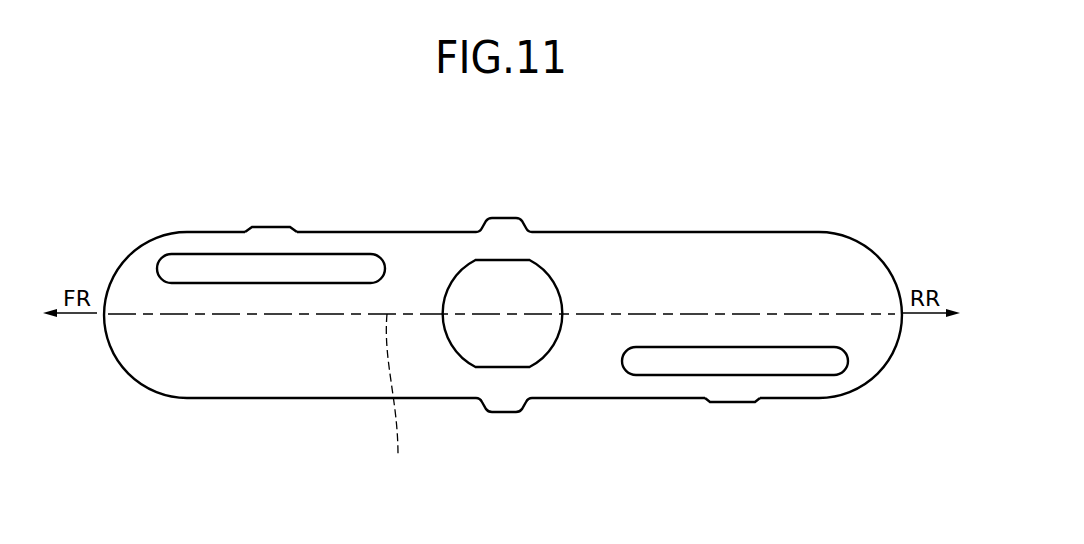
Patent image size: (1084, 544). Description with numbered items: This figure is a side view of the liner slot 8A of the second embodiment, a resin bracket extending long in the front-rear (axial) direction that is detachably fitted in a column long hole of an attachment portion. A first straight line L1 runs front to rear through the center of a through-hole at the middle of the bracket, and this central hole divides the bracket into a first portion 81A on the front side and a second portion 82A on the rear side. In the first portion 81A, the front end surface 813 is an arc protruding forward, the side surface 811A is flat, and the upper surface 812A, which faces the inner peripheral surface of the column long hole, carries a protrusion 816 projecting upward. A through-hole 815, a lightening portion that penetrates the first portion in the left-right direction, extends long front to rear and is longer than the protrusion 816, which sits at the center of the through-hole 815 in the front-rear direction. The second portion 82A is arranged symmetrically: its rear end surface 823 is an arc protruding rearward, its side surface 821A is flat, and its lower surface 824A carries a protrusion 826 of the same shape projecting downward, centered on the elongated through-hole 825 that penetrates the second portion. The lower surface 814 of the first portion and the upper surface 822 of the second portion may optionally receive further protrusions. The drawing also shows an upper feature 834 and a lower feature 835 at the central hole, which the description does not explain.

The liner slot 8A is at (507, 319).
The first portion 81A is at (283, 325).
The side surface 811A is at (283, 308).
The upper surface 812A is at (327, 232).
The front end surface 813 is at (109, 283).
The lower surface 814 is at (327, 398).
The through-hole 815 is at (193, 268).
The protrusion 816 is at (270, 227).
The second portion 82A is at (728, 318).
The side surface 821A is at (728, 334).
The upper surface 822 is at (710, 232).
The rear end surface 823 is at (903, 330).
The lower surface 824A is at (698, 398).
The through-hole 825 is at (812, 360).
The protrusion 826 is at (732, 402).
The upper protrusion 834 is at (503, 218).
The lower protrusion 835 is at (498, 412).
The first straight line L1 is at (395, 401).